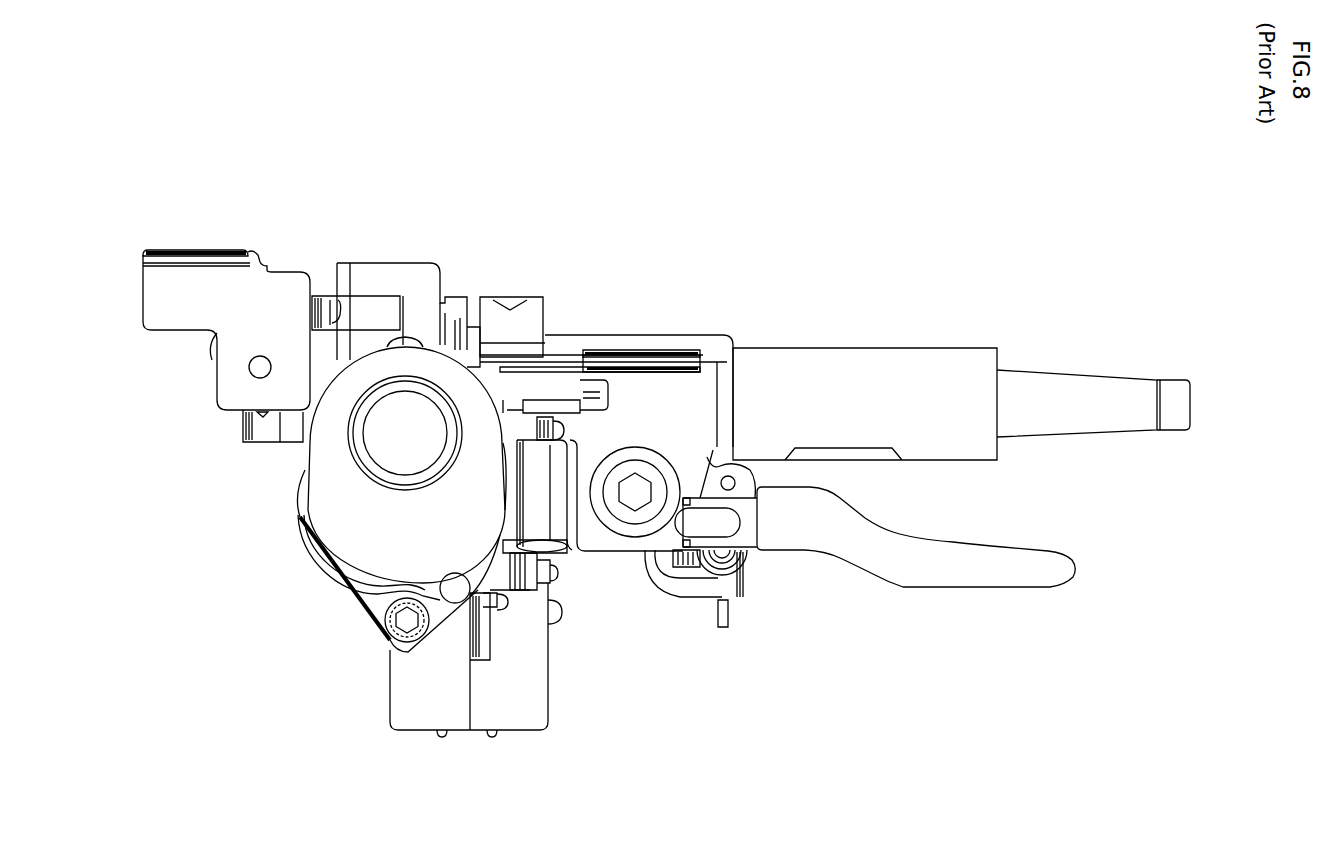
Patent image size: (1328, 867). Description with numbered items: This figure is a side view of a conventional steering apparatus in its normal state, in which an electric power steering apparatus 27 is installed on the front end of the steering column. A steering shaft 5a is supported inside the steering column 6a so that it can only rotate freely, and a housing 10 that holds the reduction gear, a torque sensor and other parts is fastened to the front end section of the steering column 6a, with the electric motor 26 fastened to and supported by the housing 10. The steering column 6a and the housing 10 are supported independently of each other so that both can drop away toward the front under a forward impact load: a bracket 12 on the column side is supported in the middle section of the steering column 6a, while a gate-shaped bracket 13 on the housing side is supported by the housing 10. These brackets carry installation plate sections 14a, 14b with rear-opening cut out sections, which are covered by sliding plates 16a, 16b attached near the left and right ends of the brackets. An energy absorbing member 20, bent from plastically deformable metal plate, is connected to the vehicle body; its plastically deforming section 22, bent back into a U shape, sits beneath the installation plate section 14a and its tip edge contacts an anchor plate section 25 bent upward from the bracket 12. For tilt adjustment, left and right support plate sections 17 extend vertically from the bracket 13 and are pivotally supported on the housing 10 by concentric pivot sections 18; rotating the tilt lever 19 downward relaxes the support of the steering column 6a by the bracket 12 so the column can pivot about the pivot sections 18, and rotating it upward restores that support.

The steering shaft 5a is at (1113, 387).
The steering column 6a is at (920, 377).
The housing 10 is at (513, 692).
The bracket on the column side 12 is at (735, 352).
The bracket on the housing side 13 is at (173, 303).
The installation plate section 14a is at (558, 356).
The installation plate section 14b is at (264, 256).
The sliding plate 16a is at (660, 352).
The sliding plate 16b is at (187, 249).
The support plate section 17 is at (237, 303).
The pivot section 18 is at (262, 372).
The tilt lever 19 is at (972, 573).
The energy absorbing member 20 is at (675, 365).
The plastically deforming section 22 is at (592, 392).
The anchor plate section 25 is at (598, 395).
The electric motor 26 is at (397, 450).
The electric power steering apparatus 27 is at (410, 697).